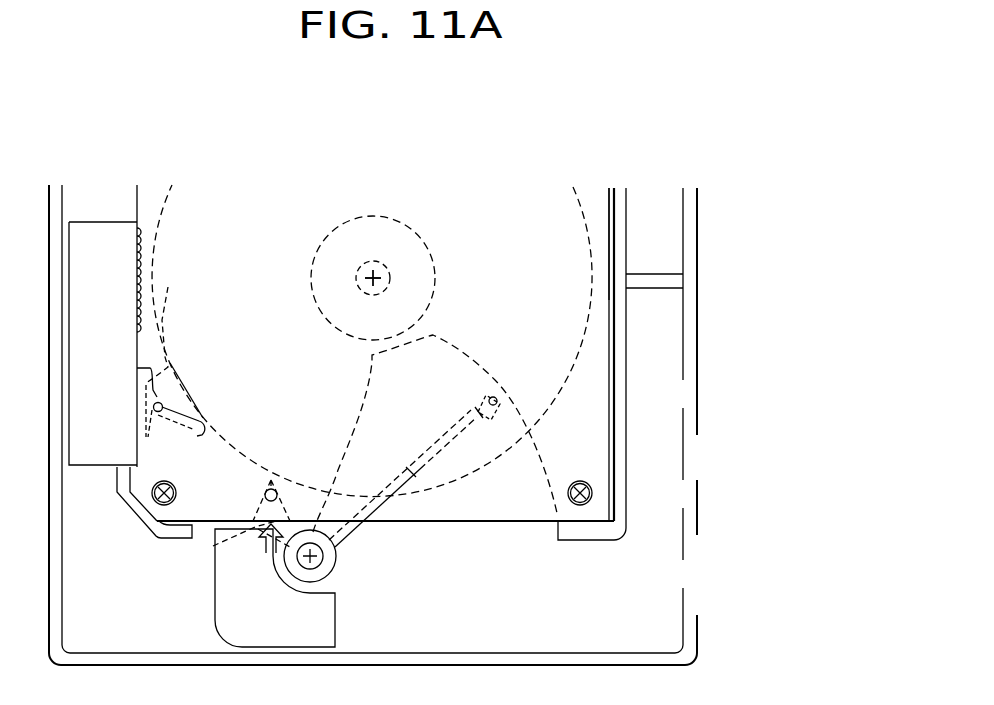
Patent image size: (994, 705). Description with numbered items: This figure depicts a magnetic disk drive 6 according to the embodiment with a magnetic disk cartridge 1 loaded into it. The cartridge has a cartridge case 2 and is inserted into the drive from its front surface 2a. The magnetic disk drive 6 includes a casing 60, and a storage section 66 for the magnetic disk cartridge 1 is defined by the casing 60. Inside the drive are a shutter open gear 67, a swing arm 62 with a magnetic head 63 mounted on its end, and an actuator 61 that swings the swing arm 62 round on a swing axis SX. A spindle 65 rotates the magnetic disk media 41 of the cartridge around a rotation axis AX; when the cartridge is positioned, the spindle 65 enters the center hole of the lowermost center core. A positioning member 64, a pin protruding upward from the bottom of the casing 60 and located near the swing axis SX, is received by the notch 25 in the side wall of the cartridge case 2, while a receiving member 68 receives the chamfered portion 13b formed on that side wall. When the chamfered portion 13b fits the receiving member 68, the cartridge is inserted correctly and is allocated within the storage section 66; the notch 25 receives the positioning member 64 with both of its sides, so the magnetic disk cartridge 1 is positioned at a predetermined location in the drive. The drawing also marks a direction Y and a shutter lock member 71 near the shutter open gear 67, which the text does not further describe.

The magnetic disk cartridge 1 is at (548, 541).
The cartridge case 2 is at (596, 460).
The front surface 2a is at (498, 553).
The magnetic disk drive 6 is at (689, 168).
The chamfered portion 13b is at (179, 520).
The notch 25 is at (213, 546).
The magnetic disk media 41 is at (590, 345).
The casing 60 is at (699, 312).
The actuator 61 is at (325, 618).
The swing arm 62 is at (422, 490).
The magnetic head 63 is at (500, 402).
The positioning member 64 is at (270, 473).
The spindle 65 is at (364, 262).
The storage section 66 is at (610, 218).
The shutter open gear 67 is at (105, 248).
The receiving member 68 is at (137, 507).
The shutter lock member 71 is at (223, 350).
The rotation axis AX is at (384, 292).
The swing axis SX is at (311, 556).
The direction Y is at (264, 550).